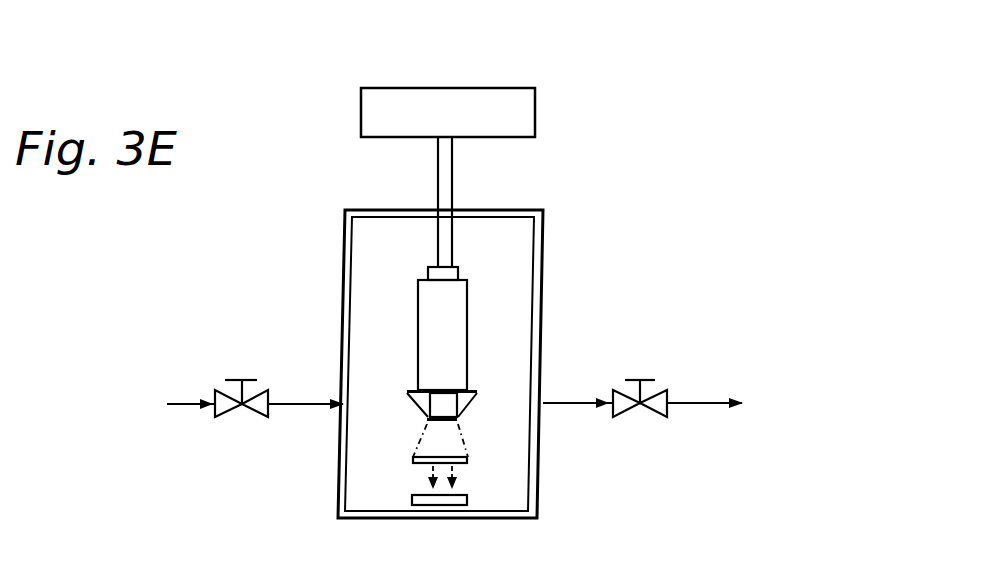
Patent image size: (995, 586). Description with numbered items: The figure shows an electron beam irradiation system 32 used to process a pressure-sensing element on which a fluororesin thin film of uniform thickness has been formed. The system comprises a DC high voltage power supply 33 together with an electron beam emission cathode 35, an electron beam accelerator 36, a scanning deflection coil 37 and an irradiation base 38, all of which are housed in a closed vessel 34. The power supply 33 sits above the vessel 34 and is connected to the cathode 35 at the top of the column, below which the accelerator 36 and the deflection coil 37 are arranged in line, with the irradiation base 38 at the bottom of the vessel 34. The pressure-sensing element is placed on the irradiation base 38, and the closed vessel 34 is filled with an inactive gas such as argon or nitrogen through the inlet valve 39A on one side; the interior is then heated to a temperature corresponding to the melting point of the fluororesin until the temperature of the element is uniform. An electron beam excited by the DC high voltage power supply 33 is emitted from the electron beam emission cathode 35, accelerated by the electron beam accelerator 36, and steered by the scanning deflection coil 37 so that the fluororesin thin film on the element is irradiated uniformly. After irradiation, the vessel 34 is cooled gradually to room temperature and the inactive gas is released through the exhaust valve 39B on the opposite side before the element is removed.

The electron beam irradiation system 32 is at (238, 257).
The DC high voltage power supply 33 is at (438, 88).
The closed vessel 34 is at (345, 275).
The electron beam emission cathode 35 is at (453, 273).
The electron beam accelerator 36 is at (448, 312).
The scanning deflection coil 37 is at (462, 395).
The irradiation base 38 is at (443, 500).
The inlet valve 39A is at (223, 385).
The exhaust valve 39B is at (610, 417).